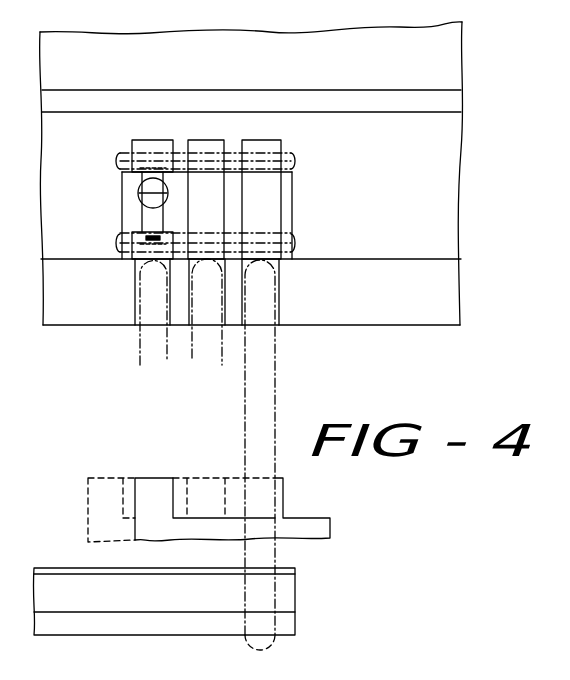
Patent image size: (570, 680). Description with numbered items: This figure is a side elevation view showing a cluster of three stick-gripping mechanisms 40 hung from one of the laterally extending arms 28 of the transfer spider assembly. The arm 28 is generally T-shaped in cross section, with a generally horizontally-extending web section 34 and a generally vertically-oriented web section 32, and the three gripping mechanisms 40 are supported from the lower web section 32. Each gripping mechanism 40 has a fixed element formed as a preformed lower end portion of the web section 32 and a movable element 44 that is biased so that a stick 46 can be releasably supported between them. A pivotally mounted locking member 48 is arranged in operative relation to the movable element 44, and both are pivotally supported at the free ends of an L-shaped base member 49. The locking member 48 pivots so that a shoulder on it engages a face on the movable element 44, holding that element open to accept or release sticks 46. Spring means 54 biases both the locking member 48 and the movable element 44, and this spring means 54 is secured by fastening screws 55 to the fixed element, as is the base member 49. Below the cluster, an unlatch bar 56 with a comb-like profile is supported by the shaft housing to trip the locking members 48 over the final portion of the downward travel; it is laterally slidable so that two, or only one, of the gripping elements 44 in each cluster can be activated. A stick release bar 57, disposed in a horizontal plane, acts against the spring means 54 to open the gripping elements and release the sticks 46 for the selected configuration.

The laterally extending arm 28 is at (135, 74).
The vertically-oriented web section 32 is at (251, 173).
The horizontally-extending web section 34 is at (368, 100).
The stick-gripping mechanism 40 is at (133, 141).
The movable element 44 is at (135, 288).
The stick 46 is at (150, 352).
The locking member 48 is at (213, 216).
The L-shaped base member 49 is at (283, 201).
The spring means 54 is at (142, 222).
The fastening screw 55 is at (140, 195).
The unlatch bar 56 is at (300, 517).
The stick release bar 57 is at (164, 601).